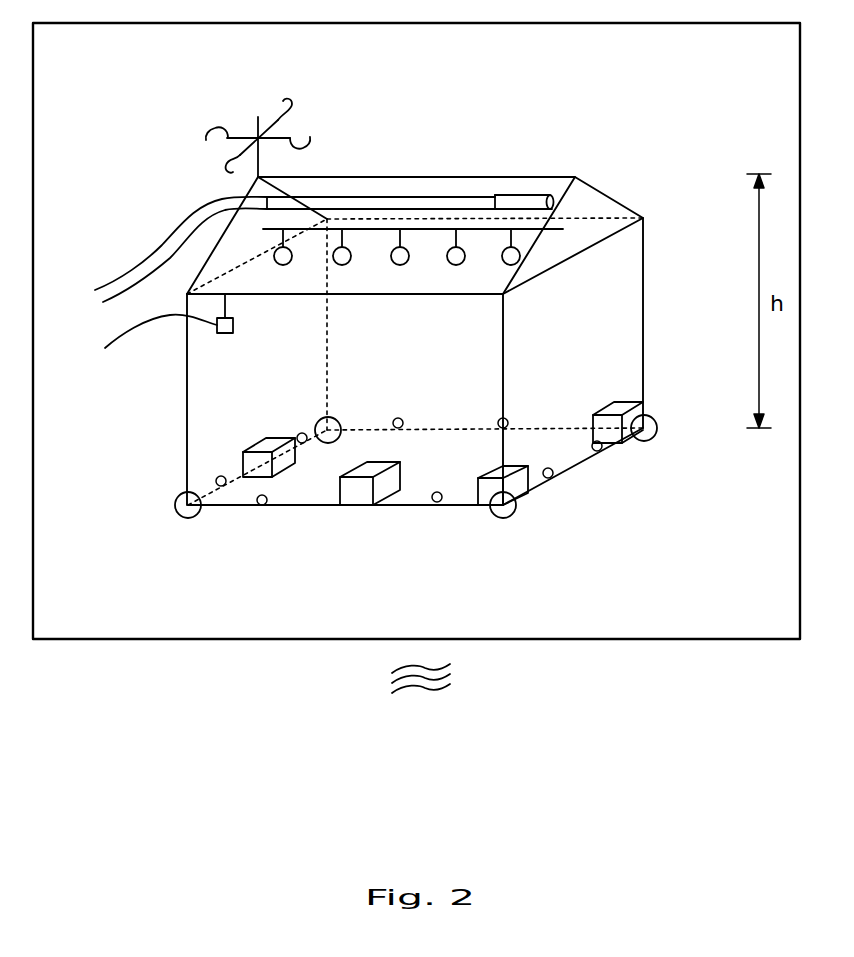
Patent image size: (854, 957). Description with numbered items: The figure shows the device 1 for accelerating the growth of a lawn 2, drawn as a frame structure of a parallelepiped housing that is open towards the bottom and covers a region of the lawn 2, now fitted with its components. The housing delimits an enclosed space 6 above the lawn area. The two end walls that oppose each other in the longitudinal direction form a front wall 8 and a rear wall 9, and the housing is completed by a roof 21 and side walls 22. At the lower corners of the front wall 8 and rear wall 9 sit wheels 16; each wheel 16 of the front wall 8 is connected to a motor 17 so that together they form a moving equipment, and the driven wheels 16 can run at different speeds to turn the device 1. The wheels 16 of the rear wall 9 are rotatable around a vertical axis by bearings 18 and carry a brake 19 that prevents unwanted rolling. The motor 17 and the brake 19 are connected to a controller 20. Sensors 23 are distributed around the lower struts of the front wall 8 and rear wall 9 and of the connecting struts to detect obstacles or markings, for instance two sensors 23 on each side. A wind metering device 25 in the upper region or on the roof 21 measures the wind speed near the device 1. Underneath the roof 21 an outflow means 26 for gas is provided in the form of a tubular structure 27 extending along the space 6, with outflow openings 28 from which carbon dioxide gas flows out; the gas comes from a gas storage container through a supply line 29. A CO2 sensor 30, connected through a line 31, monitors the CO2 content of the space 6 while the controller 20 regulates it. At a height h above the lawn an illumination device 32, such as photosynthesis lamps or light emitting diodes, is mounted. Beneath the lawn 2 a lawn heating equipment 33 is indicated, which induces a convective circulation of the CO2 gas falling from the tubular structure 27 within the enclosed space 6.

The device 1 is at (690, 113).
The lawn 2 is at (680, 630).
The space 6 is at (428, 349).
The front wall 8 is at (604, 433).
The rear wall 9 is at (200, 378).
The wheels 16 is at (422, 471).
The motor 17 is at (588, 447).
The bearings 18 is at (335, 421).
The brake 19 is at (285, 465).
The controller 20 is at (415, 485).
The roof 21 is at (602, 192).
The side walls 22 is at (362, 504).
The sensors 23 is at (297, 438).
The wind metering device 25 is at (281, 134).
The outflow means 26 is at (385, 195).
The tubular structure 27 is at (458, 196).
The outflow openings 28 is at (497, 206).
The supply line 29 is at (138, 267).
The CO2 sensor 30 is at (233, 325).
The line 31 is at (120, 333).
The illumination device 32 is at (515, 250).
The lawn heating equipment 33 is at (450, 678).